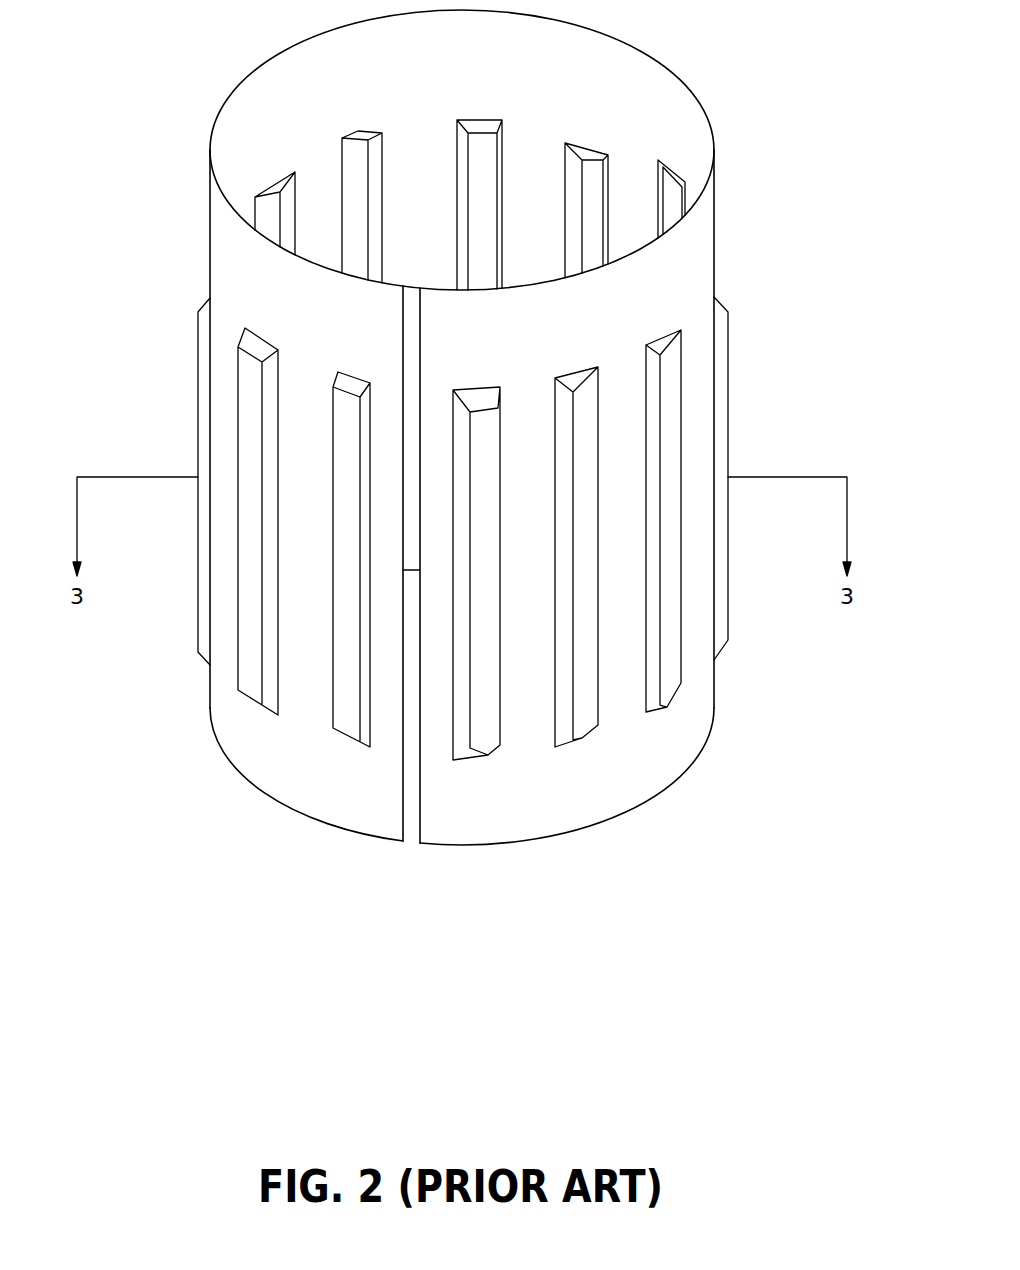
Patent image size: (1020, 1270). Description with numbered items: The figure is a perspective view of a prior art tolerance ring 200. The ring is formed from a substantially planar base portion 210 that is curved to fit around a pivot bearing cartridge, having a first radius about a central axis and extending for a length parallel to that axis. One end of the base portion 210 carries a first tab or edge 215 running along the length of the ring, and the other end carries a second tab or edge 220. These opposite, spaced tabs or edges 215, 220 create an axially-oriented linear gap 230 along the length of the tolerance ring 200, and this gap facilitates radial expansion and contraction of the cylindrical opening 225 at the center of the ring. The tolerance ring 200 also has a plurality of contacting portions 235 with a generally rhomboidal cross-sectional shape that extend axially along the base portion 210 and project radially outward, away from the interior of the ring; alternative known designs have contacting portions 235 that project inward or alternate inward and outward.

The tolerance ring 200 is at (473, 451).
The planar base portion 210 is at (680, 277).
The first tab or edge 215 is at (378, 813).
The second tab or edge 220 is at (443, 813).
The cylindrical opening 225 is at (331, 94).
The axially-oriented linear gap 230 is at (410, 760).
The contacting portions 235 is at (247, 400).